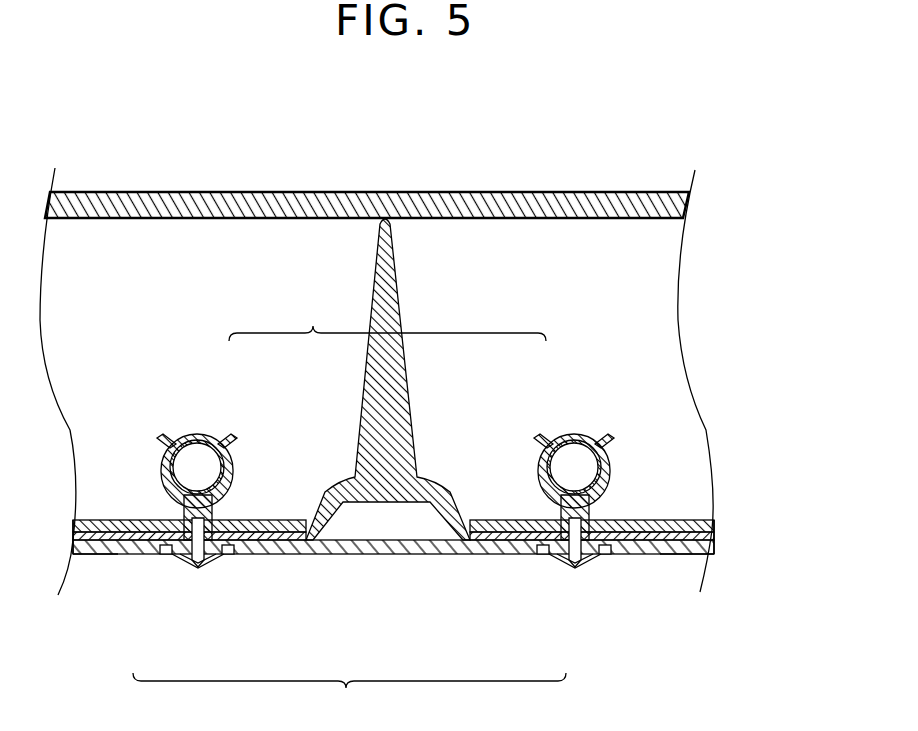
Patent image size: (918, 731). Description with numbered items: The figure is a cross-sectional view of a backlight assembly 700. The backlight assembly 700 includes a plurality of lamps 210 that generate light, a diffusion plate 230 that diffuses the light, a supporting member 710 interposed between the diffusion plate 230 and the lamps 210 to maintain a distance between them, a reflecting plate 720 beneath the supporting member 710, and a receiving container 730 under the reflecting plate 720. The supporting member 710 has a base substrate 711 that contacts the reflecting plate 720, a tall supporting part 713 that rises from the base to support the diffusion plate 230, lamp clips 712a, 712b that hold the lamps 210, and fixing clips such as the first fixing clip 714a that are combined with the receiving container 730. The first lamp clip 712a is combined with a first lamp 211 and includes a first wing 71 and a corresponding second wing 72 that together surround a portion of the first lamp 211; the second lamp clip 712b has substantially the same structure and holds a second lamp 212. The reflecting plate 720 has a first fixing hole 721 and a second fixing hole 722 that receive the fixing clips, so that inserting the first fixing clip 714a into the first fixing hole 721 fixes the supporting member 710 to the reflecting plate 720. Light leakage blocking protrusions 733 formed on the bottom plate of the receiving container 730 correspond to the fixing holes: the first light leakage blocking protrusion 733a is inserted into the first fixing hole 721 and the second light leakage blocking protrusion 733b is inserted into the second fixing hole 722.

The backlight assembly 700 is at (730, 112).
The diffusion plate 230 is at (682, 202).
The supporting part 713 is at (395, 290).
The lamps 210 is at (387, 323).
The first lamp 211 is at (201, 444).
The second lamp 212 is at (540, 444).
The first wing 71 is at (160, 444).
The second wing 72 is at (236, 444).
The first lamp clip 712a is at (213, 512).
The second lamp clip 712b is at (558, 512).
The first fixing clip 714a is at (206, 564).
The supporting member 710 is at (434, 574).
The base substrate 711 is at (708, 524).
The reflecting plate 720 is at (705, 537).
The receiving container 730 is at (434, 618).
The first fixing hole 721 is at (118, 554).
The second fixing hole 722 is at (660, 556).
The light leakage blocking protrusions 733 is at (349, 695).
The first light leakage blocking protrusion 733a is at (160, 556).
The second light leakage blocking protrusion 733b is at (545, 556).